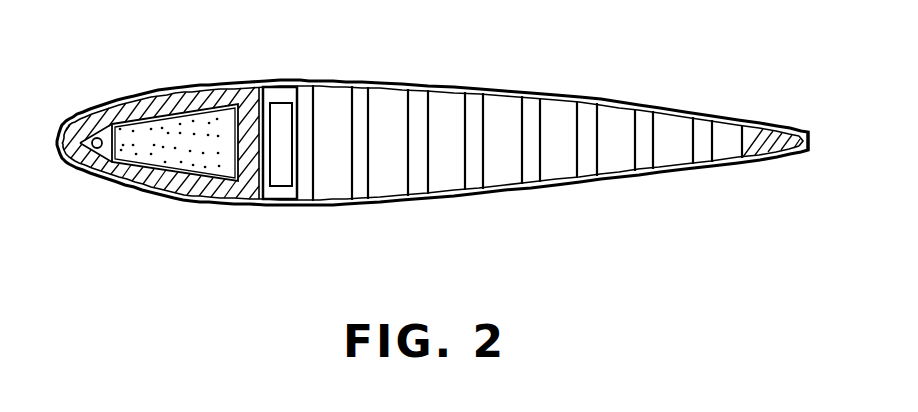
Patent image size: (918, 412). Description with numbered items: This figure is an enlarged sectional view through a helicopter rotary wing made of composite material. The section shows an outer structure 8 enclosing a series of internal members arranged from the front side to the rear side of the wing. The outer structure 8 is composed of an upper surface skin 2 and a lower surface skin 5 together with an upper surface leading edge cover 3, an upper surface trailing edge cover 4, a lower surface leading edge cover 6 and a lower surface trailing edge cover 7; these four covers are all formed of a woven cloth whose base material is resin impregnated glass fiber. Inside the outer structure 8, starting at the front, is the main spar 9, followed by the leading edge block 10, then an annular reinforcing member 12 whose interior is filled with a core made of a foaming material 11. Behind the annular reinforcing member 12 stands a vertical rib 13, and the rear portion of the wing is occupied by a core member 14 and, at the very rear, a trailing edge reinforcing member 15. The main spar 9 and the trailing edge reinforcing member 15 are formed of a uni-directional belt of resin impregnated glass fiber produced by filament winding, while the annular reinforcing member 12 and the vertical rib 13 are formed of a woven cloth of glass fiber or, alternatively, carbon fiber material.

The upper surface skin 2 is at (556, 94).
The upper surface leading edge cover 3 is at (127, 110).
The upper surface trailing edge cover 4 is at (779, 122).
The lower surface skin 5 is at (453, 194).
The lower surface leading edge cover 6 is at (82, 164).
The lower surface trailing edge cover 7 is at (771, 157).
The outer structure 8 is at (488, 88).
The main spar 9 is at (178, 94).
The leading edge block 10 is at (95, 128).
The foaming material 11 is at (201, 161).
The annular reinforcing member 12 is at (153, 180).
The vertical rib 13 is at (284, 196).
The core member 14 is at (561, 170).
The trailing edge reinforcing member 15 is at (755, 125).